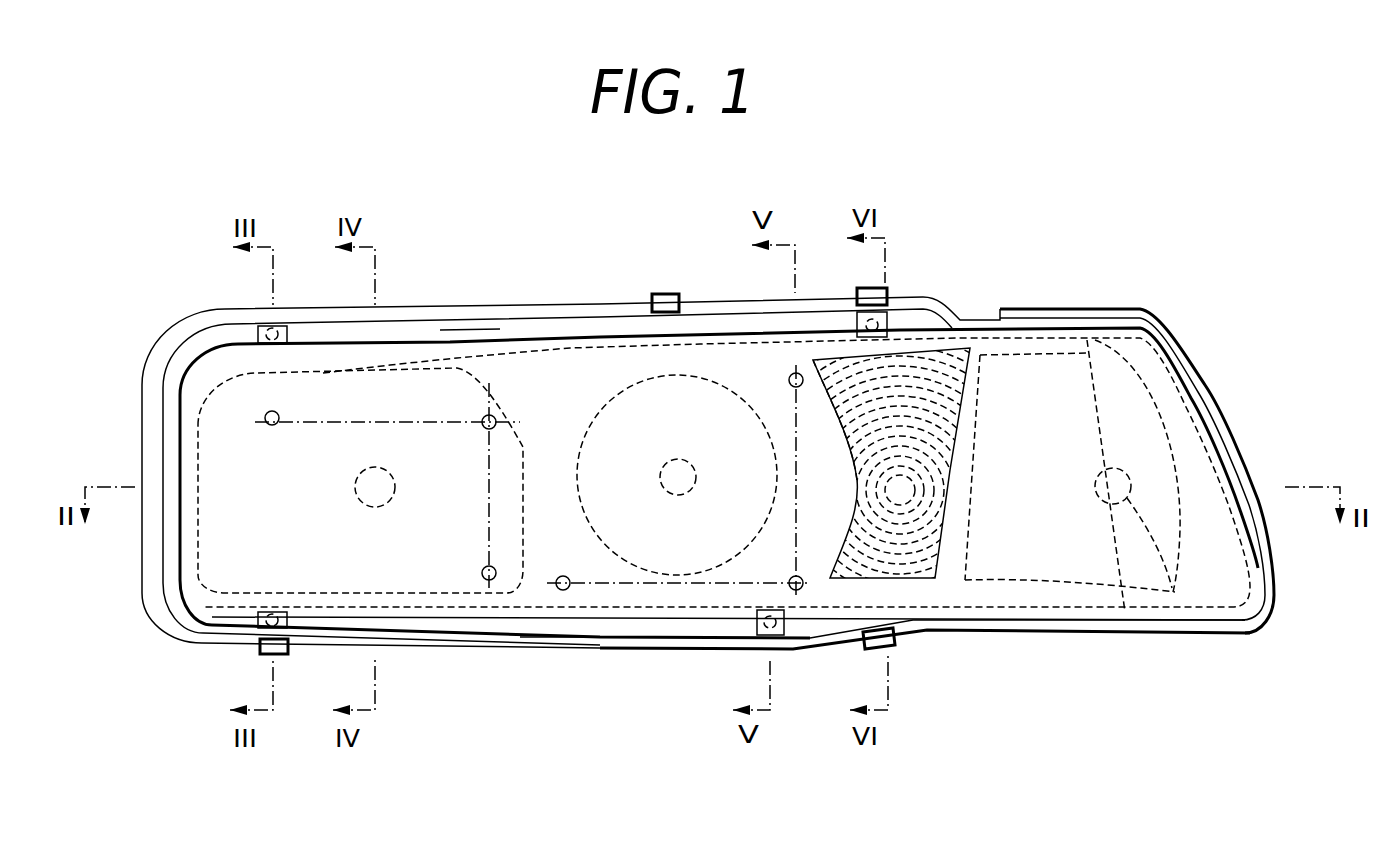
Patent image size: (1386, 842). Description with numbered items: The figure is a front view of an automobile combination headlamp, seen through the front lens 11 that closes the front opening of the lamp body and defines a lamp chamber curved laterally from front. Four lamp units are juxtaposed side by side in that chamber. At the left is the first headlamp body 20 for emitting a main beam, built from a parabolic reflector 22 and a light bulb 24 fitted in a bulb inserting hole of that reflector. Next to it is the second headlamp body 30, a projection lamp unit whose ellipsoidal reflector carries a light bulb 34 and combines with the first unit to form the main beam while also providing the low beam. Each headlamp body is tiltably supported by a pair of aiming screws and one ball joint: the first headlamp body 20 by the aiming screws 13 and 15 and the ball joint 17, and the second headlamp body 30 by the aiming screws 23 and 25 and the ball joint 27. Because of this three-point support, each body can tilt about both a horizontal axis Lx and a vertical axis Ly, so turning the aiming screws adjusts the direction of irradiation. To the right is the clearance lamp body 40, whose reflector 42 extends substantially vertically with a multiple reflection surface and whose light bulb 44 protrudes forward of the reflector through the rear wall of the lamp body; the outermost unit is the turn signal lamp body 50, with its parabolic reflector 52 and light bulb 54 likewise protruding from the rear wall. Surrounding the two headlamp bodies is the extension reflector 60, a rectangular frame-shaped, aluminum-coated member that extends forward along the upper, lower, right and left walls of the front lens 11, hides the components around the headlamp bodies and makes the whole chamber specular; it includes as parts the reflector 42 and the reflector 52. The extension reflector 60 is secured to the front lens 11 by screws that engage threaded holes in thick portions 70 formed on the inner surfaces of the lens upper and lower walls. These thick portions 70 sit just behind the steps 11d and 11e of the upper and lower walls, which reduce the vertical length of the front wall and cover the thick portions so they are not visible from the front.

The front lens 11 is at (1202, 445).
The step of upper wall 11d is at (466, 372).
The step of lower wall 11e is at (553, 634).
The aiming screw 13 is at (266, 414).
The aiming screw 15 is at (490, 580).
The ball joint 17 is at (530, 352).
The first headlamp body 20 is at (375, 547).
The parabolic reflector 22 is at (492, 415).
The aiming screw 23 is at (568, 590).
The light bulb 24 is at (376, 466).
The aiming screw 25 is at (790, 374).
The ball joint 27 is at (794, 590).
The second headlamp body 30 is at (653, 409).
The light bulb 34 is at (670, 495).
The clearance lamp body 40 is at (932, 388).
The reflector 42 is at (870, 392).
The light bulb 44 is at (900, 497).
The turn signal lamp body 50 is at (1062, 403).
The parabolic reflector 52 is at (1077, 552).
The light bulb 54 is at (1173, 583).
The extension reflector 60 is at (590, 342).
The thick portions 70 is at (258, 330).
The horizontal axis Lx is at (330, 423).
The vertical axis Ly is at (487, 532).